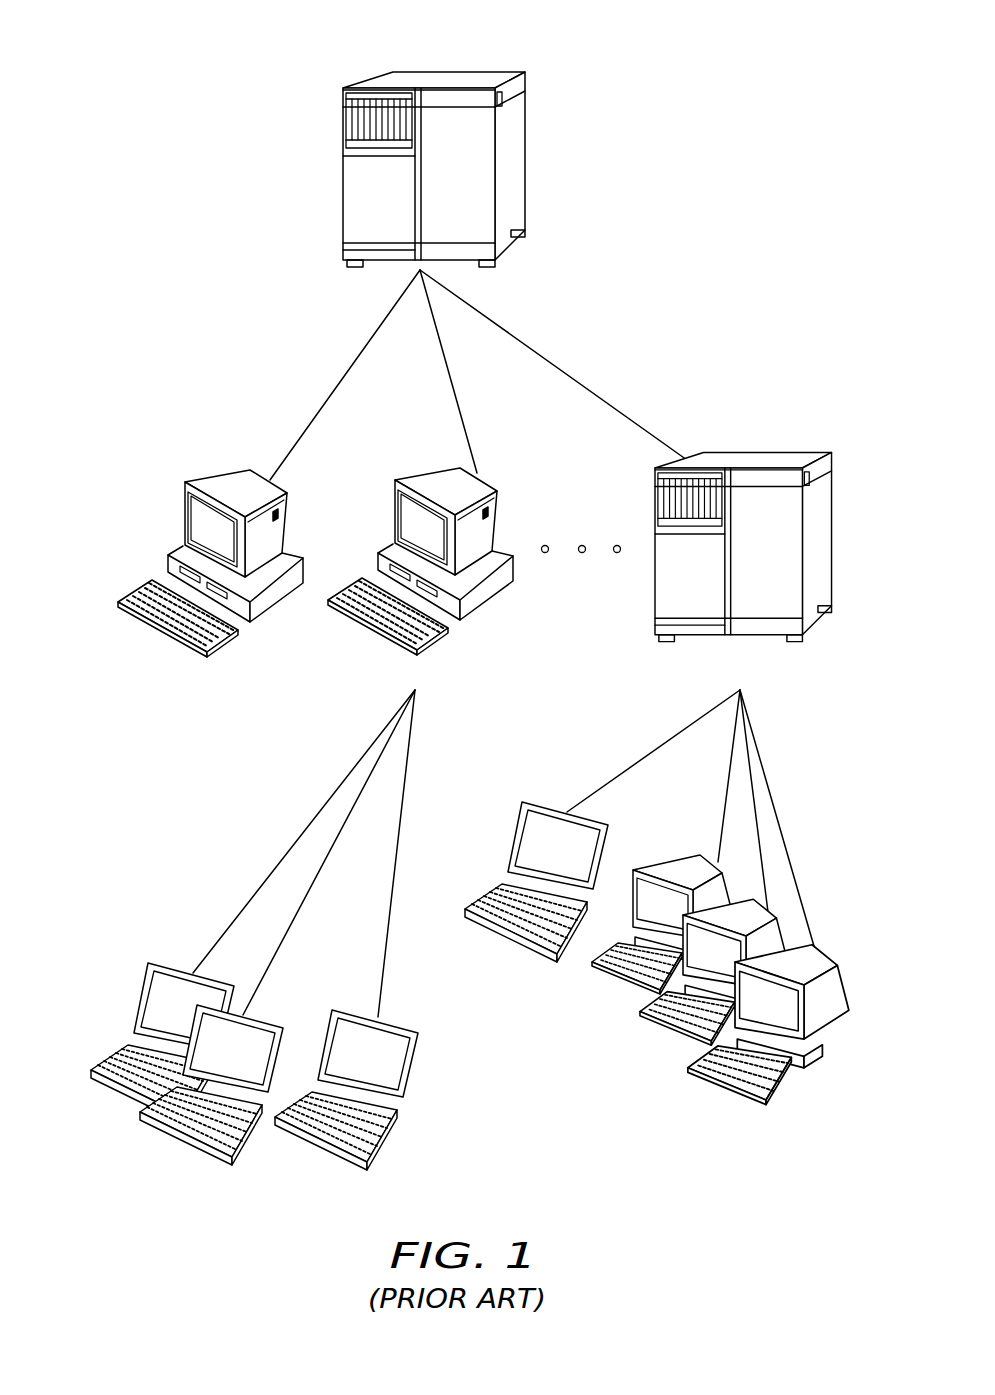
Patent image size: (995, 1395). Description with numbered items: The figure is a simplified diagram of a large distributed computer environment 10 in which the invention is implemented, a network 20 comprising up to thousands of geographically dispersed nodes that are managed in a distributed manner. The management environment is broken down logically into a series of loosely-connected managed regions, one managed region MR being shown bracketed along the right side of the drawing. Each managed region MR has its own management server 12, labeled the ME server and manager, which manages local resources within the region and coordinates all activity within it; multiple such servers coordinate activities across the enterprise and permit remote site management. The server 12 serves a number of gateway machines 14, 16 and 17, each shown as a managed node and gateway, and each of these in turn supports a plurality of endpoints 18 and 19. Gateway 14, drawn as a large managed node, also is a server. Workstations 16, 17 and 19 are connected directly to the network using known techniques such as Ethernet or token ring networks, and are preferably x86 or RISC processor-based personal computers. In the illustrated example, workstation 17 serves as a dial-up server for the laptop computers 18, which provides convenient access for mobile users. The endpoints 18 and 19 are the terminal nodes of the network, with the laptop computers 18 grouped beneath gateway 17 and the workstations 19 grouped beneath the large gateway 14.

The distributed computer environment 10 is at (162, 823).
The management server 12 is at (527, 87).
The gateway machine 14 is at (655, 500).
The gateway machine 16 is at (185, 505).
The gateway machine 17 is at (395, 503).
The laptop computers 18 is at (77, 962).
The workstations 19 is at (652, 1012).
The network 20 is at (298, 64).
The managed region MR is at (883, 630).